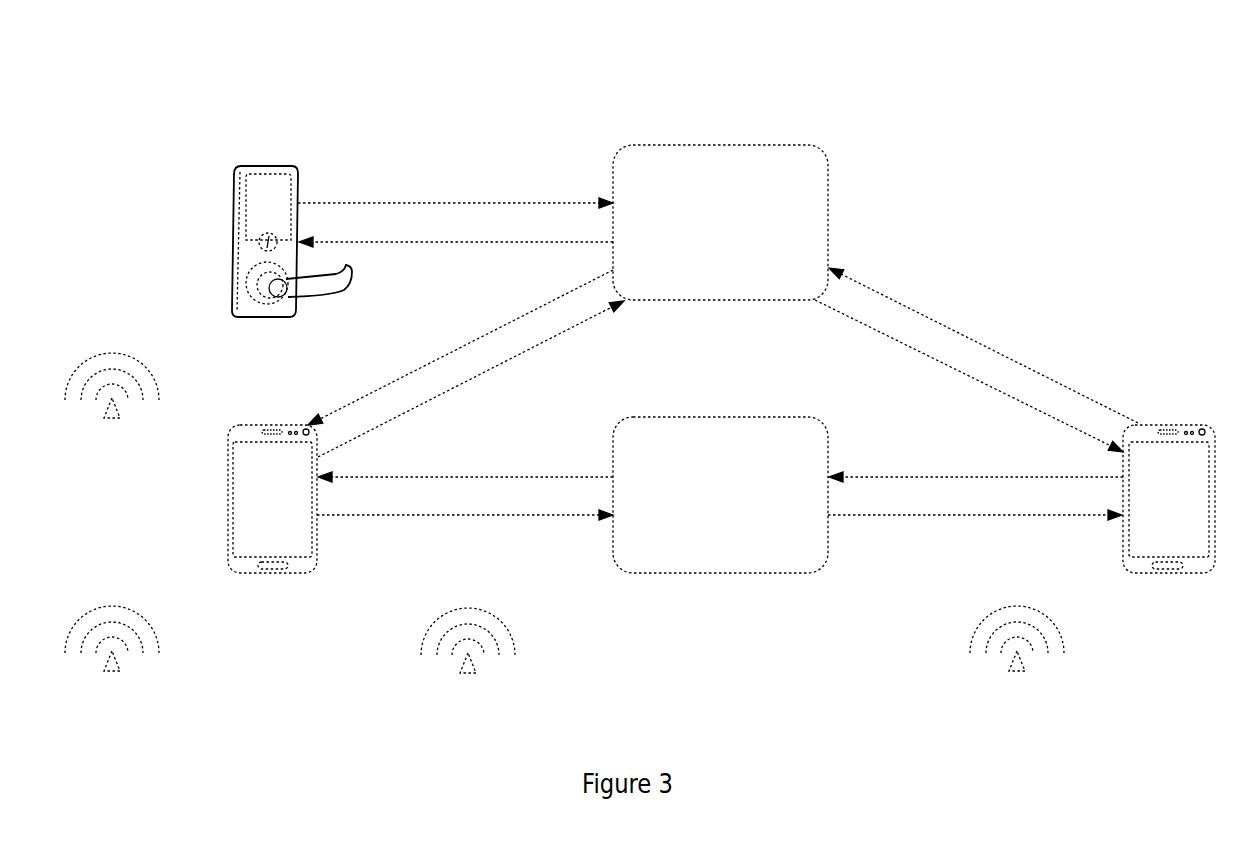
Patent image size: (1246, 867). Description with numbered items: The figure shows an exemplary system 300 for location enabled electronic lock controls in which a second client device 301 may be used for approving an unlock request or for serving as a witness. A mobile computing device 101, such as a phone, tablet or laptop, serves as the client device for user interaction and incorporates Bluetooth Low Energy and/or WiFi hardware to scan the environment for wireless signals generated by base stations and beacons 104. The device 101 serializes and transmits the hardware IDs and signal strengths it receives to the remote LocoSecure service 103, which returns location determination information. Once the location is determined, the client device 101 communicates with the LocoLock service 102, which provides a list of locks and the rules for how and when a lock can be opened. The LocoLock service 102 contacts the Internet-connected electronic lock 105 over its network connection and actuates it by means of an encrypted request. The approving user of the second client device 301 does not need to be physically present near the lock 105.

The system for location enabled electronic lock controls 300 is at (718, 273).
The Internet-connected electronic lock 105 is at (263, 165).
The LocoLock service 102 is at (829, 223).
The LocoSecure service 103 is at (724, 573).
The mobile computing device 101 is at (277, 573).
The second client device 301 is at (1168, 573).
The beacon 104 is at (564, 549).